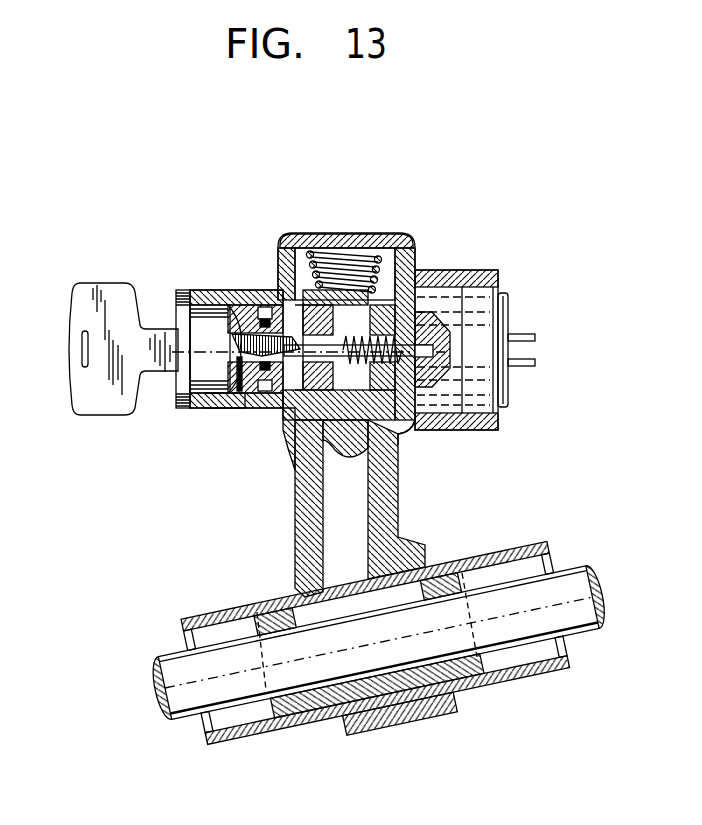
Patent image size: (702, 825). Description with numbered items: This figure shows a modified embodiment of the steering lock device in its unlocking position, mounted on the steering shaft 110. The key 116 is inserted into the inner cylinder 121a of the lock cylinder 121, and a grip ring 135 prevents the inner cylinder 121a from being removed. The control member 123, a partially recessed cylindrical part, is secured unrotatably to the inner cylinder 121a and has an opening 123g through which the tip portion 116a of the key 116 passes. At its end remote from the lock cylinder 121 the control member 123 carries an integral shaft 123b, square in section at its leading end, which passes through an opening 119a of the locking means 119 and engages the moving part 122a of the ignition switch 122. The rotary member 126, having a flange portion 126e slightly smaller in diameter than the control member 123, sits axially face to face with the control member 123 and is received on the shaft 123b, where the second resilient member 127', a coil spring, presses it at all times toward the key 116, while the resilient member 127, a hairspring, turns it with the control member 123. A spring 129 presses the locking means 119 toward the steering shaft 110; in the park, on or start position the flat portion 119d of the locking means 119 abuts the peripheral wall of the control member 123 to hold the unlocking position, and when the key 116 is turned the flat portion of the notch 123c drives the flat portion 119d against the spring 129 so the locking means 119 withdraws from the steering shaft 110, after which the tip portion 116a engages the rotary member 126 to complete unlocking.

The steering shaft 110 is at (172, 666).
The key 116 is at (80, 318).
The tip portion of the key 116a is at (228, 333).
The locking means 119 is at (355, 513).
The opening of the locking means 119a is at (390, 236).
The flat portion of the locking means 119d is at (300, 237).
The lock cylinder 121 is at (200, 333).
The inner cylinder 121a is at (228, 408).
The ignition switch 122 is at (485, 290).
The moving part of the ignition switch 122a is at (450, 350).
The control member 123 is at (280, 292).
The shaft 123b is at (398, 433).
The notch 123c is at (280, 258).
The opening 123g is at (283, 400).
The rotary member 126 is at (300, 395).
The flange portion 126e is at (305, 433).
The resilient member 127 is at (319, 296).
The second resilient member 127' is at (399, 268).
The spring 129 is at (346, 232).
The grip ring 135 is at (232, 408).